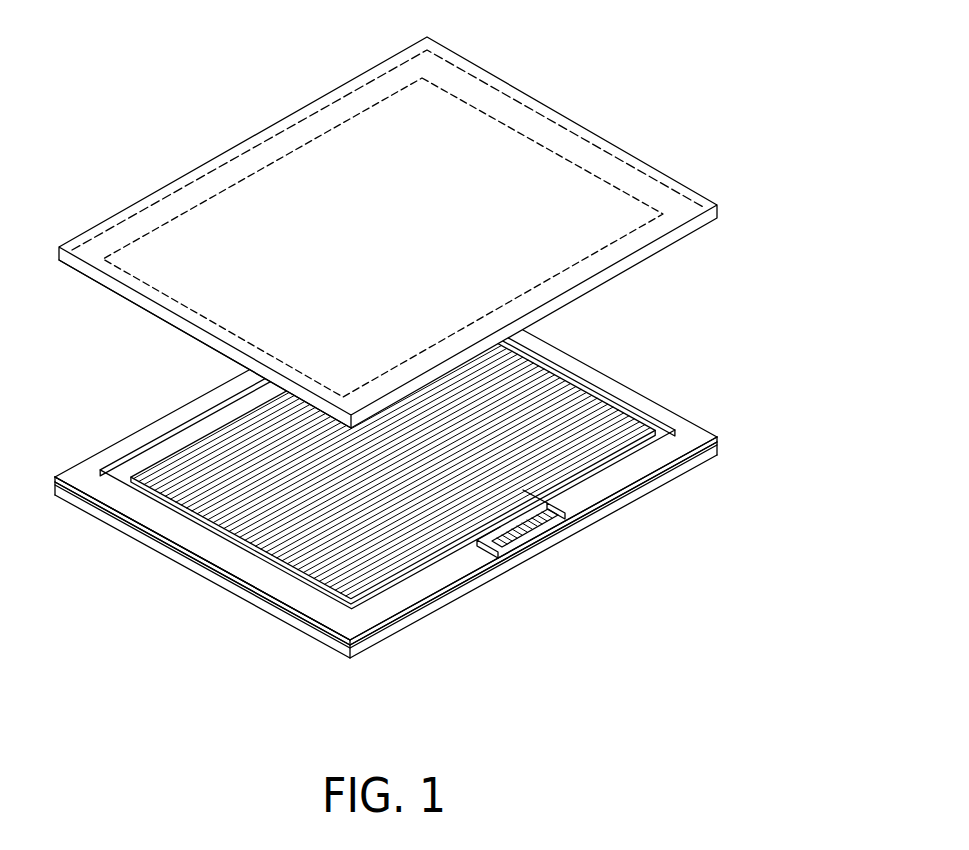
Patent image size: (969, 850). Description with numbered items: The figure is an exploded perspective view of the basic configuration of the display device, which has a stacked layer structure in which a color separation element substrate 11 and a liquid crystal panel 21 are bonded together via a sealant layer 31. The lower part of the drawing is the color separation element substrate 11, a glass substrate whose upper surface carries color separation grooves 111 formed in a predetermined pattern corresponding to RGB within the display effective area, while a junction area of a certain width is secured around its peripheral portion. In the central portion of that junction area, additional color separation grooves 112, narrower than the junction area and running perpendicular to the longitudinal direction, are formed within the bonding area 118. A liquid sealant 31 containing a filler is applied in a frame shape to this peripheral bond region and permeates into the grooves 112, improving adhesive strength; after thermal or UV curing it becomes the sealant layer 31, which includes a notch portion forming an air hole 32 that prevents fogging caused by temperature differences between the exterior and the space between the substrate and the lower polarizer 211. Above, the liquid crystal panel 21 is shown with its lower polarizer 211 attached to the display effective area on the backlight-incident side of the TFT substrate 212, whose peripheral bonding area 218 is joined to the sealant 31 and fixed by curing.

The color separation element substrate 11 is at (656, 488).
The color separation grooves 111 is at (205, 442).
The color separation grooves 112 is at (550, 526).
The bonding area 118 is at (122, 515).
The liquid crystal panel 21 is at (372, 223).
The lower polarizer 211 is at (538, 97).
The TFT substrate 212 is at (567, 160).
The bonding area 218 is at (112, 285).
The sealant layer 31 is at (180, 548).
The air hole 32 is at (525, 531).